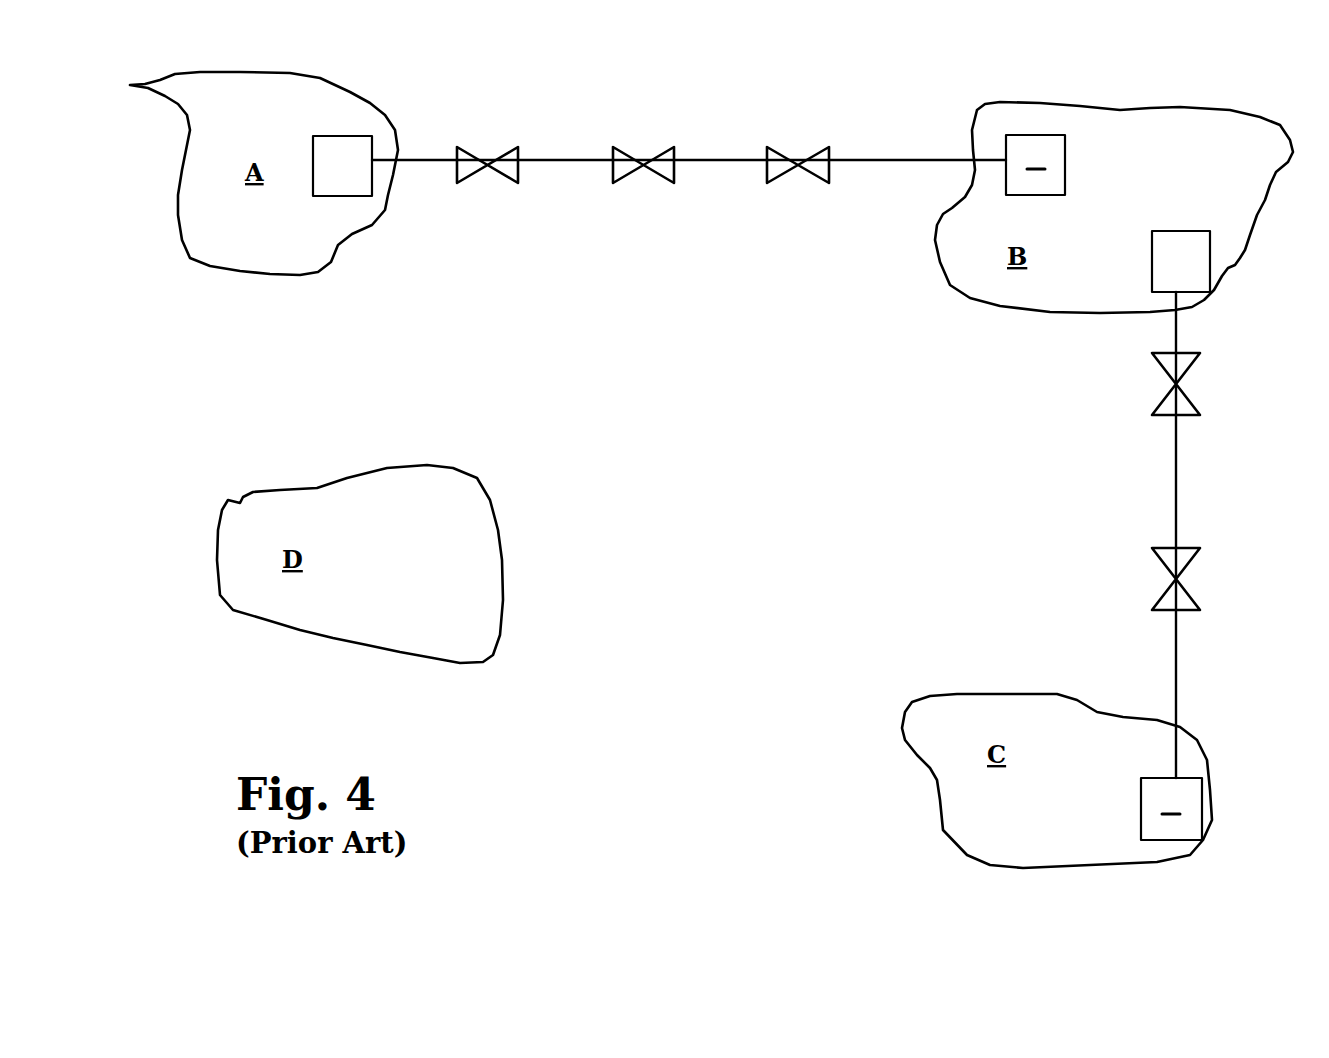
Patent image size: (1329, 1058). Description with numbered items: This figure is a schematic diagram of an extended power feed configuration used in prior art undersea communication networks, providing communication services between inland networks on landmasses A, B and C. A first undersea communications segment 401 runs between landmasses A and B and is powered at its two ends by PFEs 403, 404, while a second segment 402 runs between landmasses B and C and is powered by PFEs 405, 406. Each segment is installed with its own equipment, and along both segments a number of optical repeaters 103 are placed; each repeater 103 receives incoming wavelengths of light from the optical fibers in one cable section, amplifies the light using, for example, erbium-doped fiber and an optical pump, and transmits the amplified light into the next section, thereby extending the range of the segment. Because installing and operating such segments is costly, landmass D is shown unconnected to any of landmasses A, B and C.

The optical repeater 103 is at (1110, 567).
The first undersea communications segment 401 is at (699, 138).
The second undersea communications segment 402 is at (1195, 508).
The PFE 403 is at (337, 215).
The PFE 404 is at (1014, 121).
The PFE 405 is at (1236, 281).
The PFE 406 is at (1216, 789).